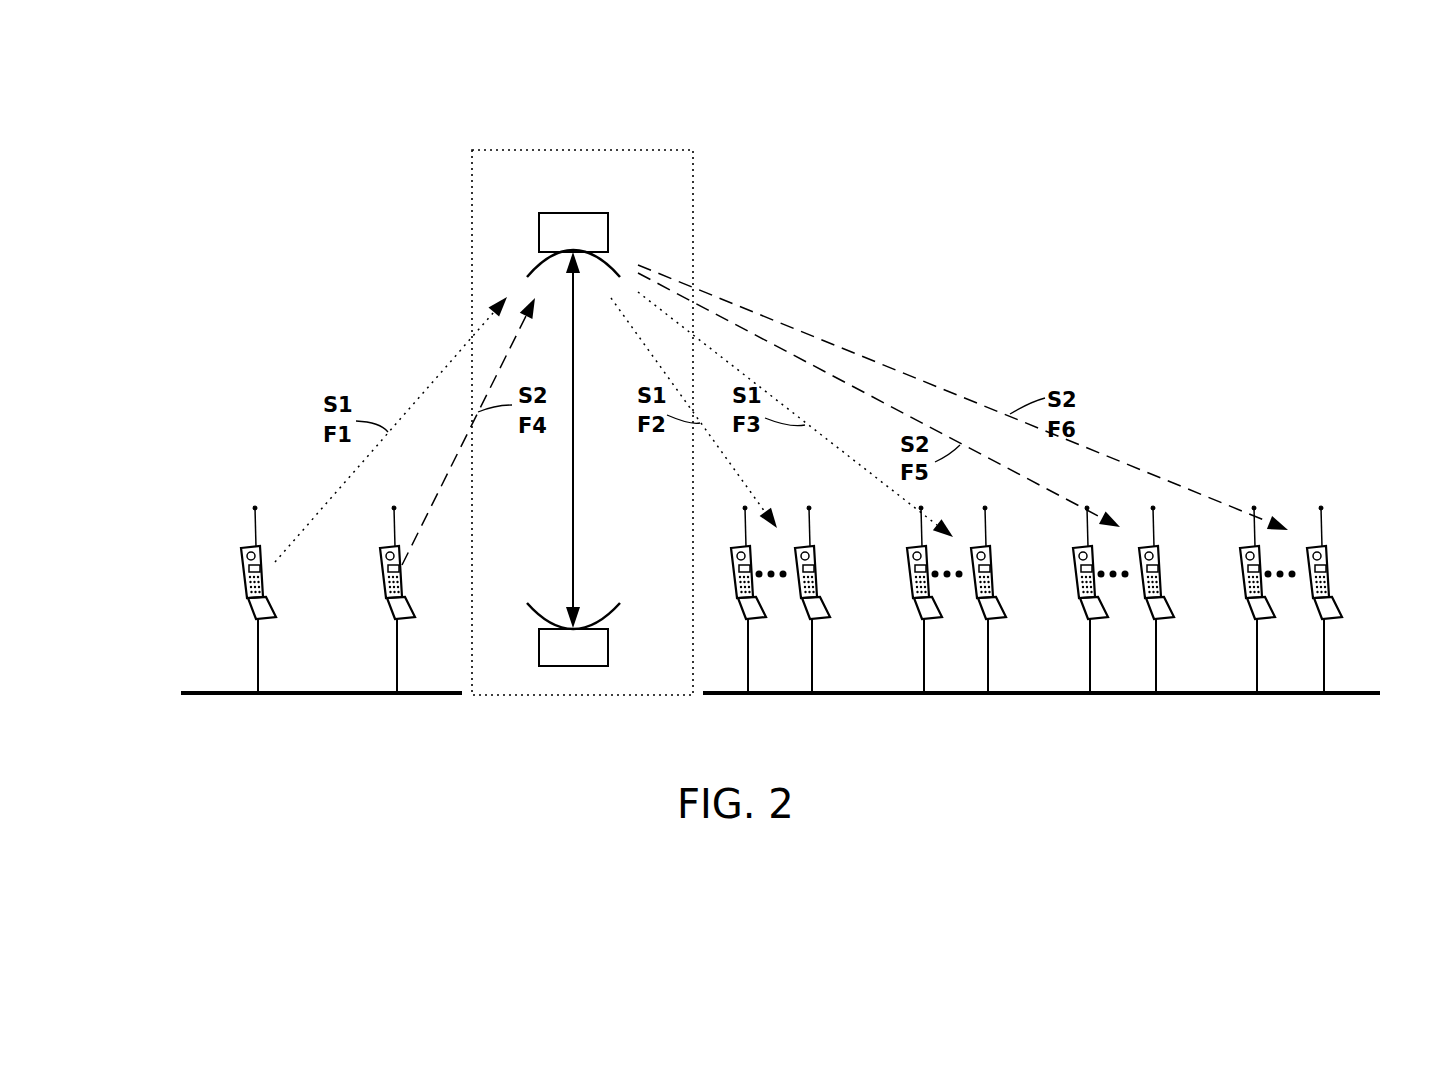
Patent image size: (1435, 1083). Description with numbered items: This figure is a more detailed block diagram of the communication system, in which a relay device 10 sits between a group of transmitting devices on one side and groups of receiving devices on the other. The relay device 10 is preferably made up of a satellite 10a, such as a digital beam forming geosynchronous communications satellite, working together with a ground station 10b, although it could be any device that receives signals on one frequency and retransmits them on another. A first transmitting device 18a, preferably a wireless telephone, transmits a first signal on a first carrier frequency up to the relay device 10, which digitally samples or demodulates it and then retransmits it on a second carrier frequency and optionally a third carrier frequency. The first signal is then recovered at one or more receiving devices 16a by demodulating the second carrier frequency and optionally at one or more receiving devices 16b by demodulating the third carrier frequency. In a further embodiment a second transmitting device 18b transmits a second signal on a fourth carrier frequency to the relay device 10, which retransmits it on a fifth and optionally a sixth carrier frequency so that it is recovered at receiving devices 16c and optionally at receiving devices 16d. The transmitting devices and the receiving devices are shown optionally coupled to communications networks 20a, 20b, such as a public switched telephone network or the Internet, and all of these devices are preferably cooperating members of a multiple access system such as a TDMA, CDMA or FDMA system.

The relay device 10 is at (693, 197).
The satellite 10a is at (573, 213).
The ground station 10b is at (608, 665).
The receiving devices 16a is at (733, 556).
The receiving devices 16b is at (912, 556).
The receiving devices 16c is at (1077, 556).
The receiving devices 16d is at (1243, 556).
The first transmitting device 18a is at (243, 562).
The second transmitting device 18b is at (383, 562).
The first area / ground 20a is at (190, 692).
The second area / ground 20b is at (1362, 693).